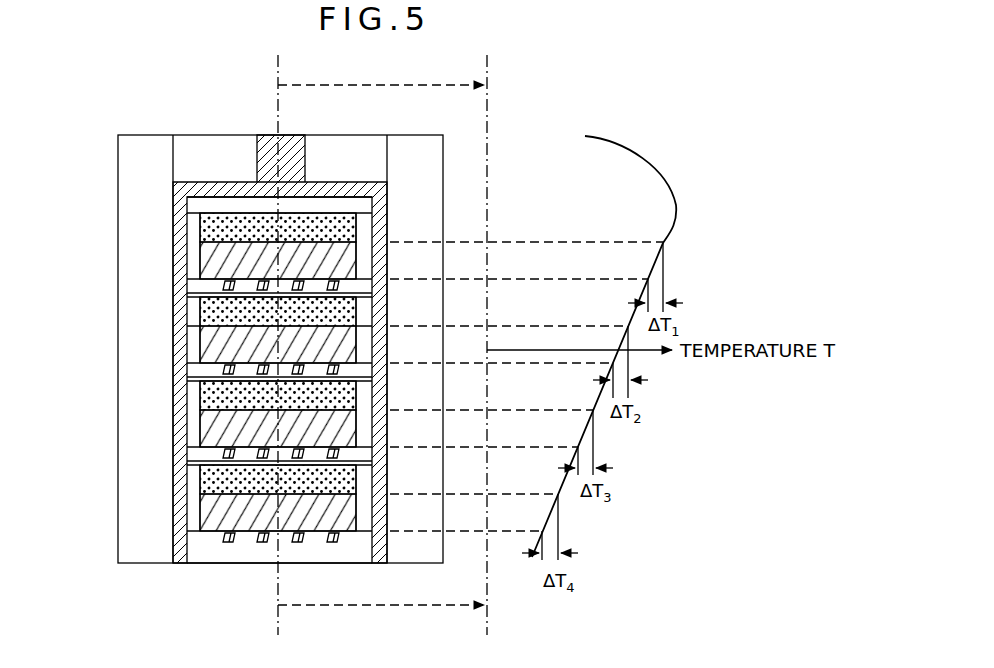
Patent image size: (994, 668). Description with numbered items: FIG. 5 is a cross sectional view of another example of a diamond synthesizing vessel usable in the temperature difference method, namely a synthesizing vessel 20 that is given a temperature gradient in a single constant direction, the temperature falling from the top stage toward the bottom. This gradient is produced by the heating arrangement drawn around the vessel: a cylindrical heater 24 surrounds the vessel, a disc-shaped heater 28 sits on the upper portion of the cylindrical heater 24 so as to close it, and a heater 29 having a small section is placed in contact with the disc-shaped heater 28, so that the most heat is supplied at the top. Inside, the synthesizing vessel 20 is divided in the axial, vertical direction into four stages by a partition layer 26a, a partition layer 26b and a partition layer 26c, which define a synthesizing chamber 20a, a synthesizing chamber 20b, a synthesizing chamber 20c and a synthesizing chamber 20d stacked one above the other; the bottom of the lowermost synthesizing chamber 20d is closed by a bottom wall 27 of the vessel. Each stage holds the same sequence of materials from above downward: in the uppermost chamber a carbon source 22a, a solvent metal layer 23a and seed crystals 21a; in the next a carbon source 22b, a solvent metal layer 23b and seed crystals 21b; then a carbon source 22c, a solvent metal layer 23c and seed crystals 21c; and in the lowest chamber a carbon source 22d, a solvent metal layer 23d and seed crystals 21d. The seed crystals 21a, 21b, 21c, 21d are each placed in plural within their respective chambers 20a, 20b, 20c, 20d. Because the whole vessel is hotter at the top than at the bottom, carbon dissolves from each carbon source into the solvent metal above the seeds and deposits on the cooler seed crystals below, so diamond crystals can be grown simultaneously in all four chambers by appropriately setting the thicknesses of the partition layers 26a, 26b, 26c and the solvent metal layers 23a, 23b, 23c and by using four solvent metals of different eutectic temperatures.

The synthesizing vessel 20 is at (140, 118).
The disc-shaped heater 28 is at (220, 180).
The heater having a small section 29 is at (268, 133).
The cylindrical heater 24 is at (184, 327).
The bottom wall 27 is at (243, 556).
The synthesizing chamber 20a is at (195, 242).
The synthesizing chamber 20b is at (190, 326).
The synthesizing chamber 20c is at (185, 410).
The synthesizing chamber 20d is at (184, 495).
The seed crystal 21a is at (200, 276).
The seed crystal 21b is at (186, 379).
The seed crystal 21c is at (185, 463).
The seed crystal 21d is at (217, 541).
The carbon source 22a is at (352, 230).
The carbon source 22b is at (350, 316).
The carbon source 22c is at (348, 395).
The carbon source 22d is at (347, 478).
The solvent metal layer 23a is at (350, 263).
The solvent metal layer 23b is at (350, 352).
The solvent metal layer 23c is at (350, 433).
The solvent metal layer 23d is at (350, 517).
The partition layer 26a is at (197, 289).
The partition layer 26b is at (193, 368).
The partition layer 26c is at (190, 453).